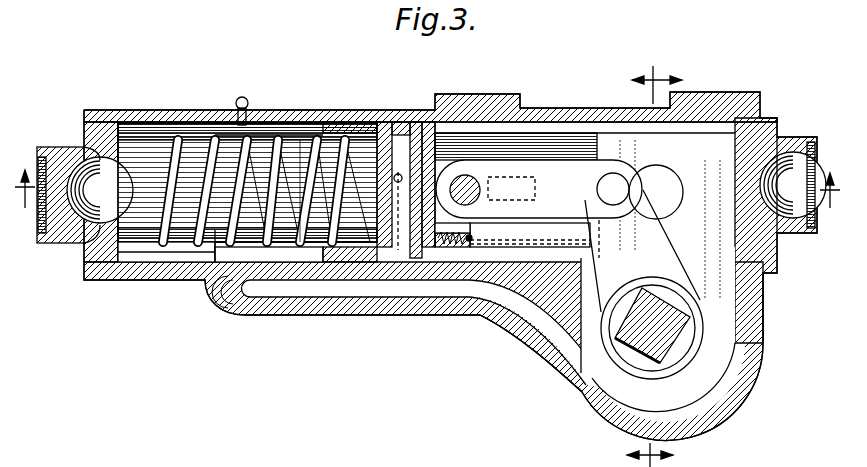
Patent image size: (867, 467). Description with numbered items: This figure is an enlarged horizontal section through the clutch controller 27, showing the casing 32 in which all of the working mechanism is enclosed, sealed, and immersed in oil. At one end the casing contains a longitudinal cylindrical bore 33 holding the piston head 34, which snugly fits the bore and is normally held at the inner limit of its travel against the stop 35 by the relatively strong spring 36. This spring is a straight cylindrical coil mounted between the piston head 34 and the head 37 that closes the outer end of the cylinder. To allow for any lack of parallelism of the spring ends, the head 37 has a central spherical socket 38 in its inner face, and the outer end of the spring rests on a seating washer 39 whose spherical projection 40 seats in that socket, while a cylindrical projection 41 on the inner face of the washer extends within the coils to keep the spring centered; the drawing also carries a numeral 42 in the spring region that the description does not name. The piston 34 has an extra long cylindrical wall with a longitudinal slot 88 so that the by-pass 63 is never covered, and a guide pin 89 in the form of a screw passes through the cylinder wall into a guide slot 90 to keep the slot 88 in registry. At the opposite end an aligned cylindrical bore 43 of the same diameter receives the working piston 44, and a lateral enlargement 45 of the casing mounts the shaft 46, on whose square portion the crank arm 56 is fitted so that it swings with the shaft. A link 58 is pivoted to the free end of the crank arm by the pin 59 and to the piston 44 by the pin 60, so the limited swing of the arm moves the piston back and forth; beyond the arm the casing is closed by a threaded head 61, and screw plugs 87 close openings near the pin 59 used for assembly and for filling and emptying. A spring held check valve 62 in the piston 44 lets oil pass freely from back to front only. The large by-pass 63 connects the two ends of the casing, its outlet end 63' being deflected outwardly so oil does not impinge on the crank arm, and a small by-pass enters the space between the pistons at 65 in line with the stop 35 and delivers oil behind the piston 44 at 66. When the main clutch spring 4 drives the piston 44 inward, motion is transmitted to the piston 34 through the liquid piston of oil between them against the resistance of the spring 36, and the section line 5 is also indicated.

The main clutch spring 4 is at (427, 197).
The section line 5- 5 is at (654, 254).
The controller 27 is at (154, 110).
The casing 32 is at (187, 268).
The longitudinal cylindrical bore 33 is at (203, 252).
The piston head 34 is at (346, 118).
The stop 35 is at (399, 125).
The spring 36 is at (162, 235).
The head 37 is at (82, 116).
The spherical socket 38 is at (93, 215).
The seating washer 39 is at (110, 230).
The spherical projection 40 is at (78, 162).
The cylindrical projection 41 is at (124, 178).
The spring guide 42 is at (307, 147).
The cylindrical bore 43 is at (551, 120).
The piston 44 is at (470, 122).
The lateral enlargement 45 is at (735, 388).
The shaft 46 is at (661, 362).
The crank arm 56 is at (674, 272).
The link 58 is at (562, 162).
The pin 59 is at (615, 187).
The pin 60 is at (472, 190).
The threaded head 61 is at (782, 240).
The check valve 62 is at (454, 246).
The by-pass 63 is at (420, 332).
The outlet end 63' is at (531, 361).
The by-pass entry point 65 is at (393, 287).
The by-pass delivery point 66 is at (540, 200).
The screw plug 87 is at (677, 189).
The longitudinal slot 88 is at (218, 265).
The guide pin 89 is at (237, 106).
The guide slot 90 is at (287, 137).